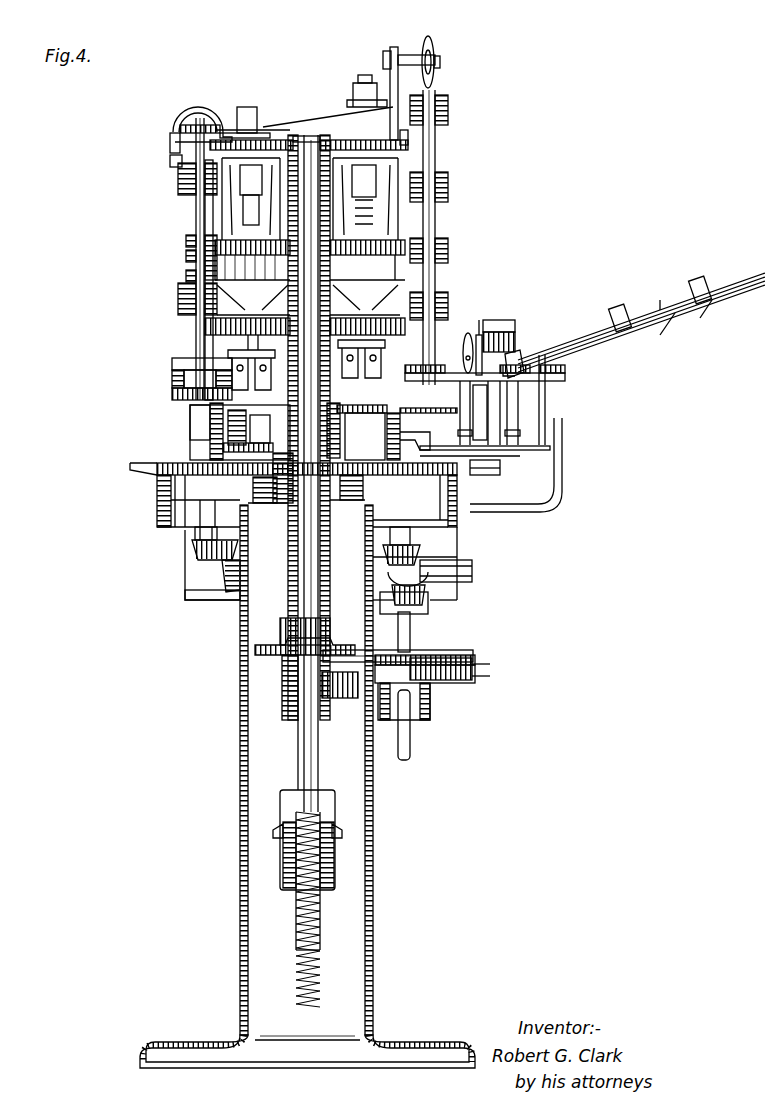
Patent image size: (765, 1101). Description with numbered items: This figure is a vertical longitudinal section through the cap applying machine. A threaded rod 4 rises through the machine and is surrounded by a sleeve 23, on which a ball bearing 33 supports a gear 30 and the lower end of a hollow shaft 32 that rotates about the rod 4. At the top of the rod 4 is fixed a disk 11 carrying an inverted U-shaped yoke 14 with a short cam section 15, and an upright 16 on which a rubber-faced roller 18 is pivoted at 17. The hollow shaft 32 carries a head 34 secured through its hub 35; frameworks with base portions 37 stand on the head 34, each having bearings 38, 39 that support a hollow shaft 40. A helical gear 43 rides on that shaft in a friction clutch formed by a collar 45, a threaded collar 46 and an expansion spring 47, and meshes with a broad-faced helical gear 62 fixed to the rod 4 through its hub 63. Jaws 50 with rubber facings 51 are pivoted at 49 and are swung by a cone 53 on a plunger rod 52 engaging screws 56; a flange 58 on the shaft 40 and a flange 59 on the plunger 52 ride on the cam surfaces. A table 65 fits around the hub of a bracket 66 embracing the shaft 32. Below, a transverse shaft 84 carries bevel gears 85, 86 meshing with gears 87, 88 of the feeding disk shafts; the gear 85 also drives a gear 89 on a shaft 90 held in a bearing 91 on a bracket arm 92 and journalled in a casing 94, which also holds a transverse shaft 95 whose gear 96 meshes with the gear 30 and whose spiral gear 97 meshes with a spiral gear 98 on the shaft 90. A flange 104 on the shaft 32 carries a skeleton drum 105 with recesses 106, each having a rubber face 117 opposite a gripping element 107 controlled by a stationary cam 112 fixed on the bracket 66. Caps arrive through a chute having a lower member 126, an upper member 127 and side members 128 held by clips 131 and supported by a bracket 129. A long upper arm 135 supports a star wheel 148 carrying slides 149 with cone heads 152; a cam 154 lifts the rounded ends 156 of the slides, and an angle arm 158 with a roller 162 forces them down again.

The rod 4 is at (300, 757).
The disk 11 is at (362, 140).
The yoke 14 is at (198, 112).
The short cam section 15 is at (170, 160).
The upright 16 is at (399, 52).
The pivot 17 is at (383, 58).
The roller 18 is at (426, 40).
The sleeve 23 is at (285, 706).
The gear 30 is at (262, 652).
The hollow shaft 32 is at (290, 600).
The ball bearing 33 is at (283, 672).
The head 34 is at (215, 326).
The hub 35 is at (306, 362).
The base portion 37 is at (262, 318).
The bearing 38 is at (178, 185).
The bearing 39 is at (178, 298).
The hollow shaft 40 is at (196, 223).
The helical gear 43 is at (451, 241).
The collar 45 is at (186, 264).
The threaded collar 46 is at (186, 240).
The expansion spring 47 is at (186, 255).
The pivot 49 is at (184, 381).
The jaw 50 is at (184, 375).
The facing 51 is at (172, 394).
The plunger rod 52 is at (196, 210).
The cone 53 is at (190, 360).
The screw 56 is at (176, 370).
The flange 58 is at (180, 128).
The flange 59 is at (175, 140).
The helical gear 62 is at (405, 262).
The hub 63 is at (340, 200).
The table 65 is at (157, 510).
The bracket 66 is at (282, 500).
The transverse shaft 84 is at (225, 575).
The bevel gear 85 is at (472, 572).
The bevel gear 86 is at (228, 590).
The gear 87 is at (422, 548).
The gear 88 is at (192, 552).
The gear 89 is at (428, 592).
The shaft 90 is at (440, 650).
The bearing 91 is at (411, 625).
The bracket arm 92 is at (380, 600).
The casing 94 is at (412, 720).
The transverse shaft 95 is at (472, 672).
The gear 96 is at (340, 698).
The spiral gear 97 is at (475, 660).
The spiral gear 98 is at (432, 700).
The flange 104 is at (357, 420).
The skeleton drum 105 is at (372, 422).
The recess 106 is at (200, 415).
The gripping element 107 is at (406, 440).
The cam 112 is at (360, 470).
The yielding face 117 is at (210, 440).
The lower member 126 is at (712, 300).
The upper member 127 is at (660, 312).
The side members 128 is at (675, 313).
The bracket 129 is at (562, 480).
The clips 131 is at (575, 345).
The upper arm 135 is at (515, 338).
The star wheel 148 is at (530, 446).
The slides 149 is at (505, 410).
The head 152 is at (565, 375).
The cam 154 is at (498, 466).
The rounded lower extremity 156 is at (520, 456).
The angle arm 158 is at (500, 332).
The roller 162 is at (470, 340).